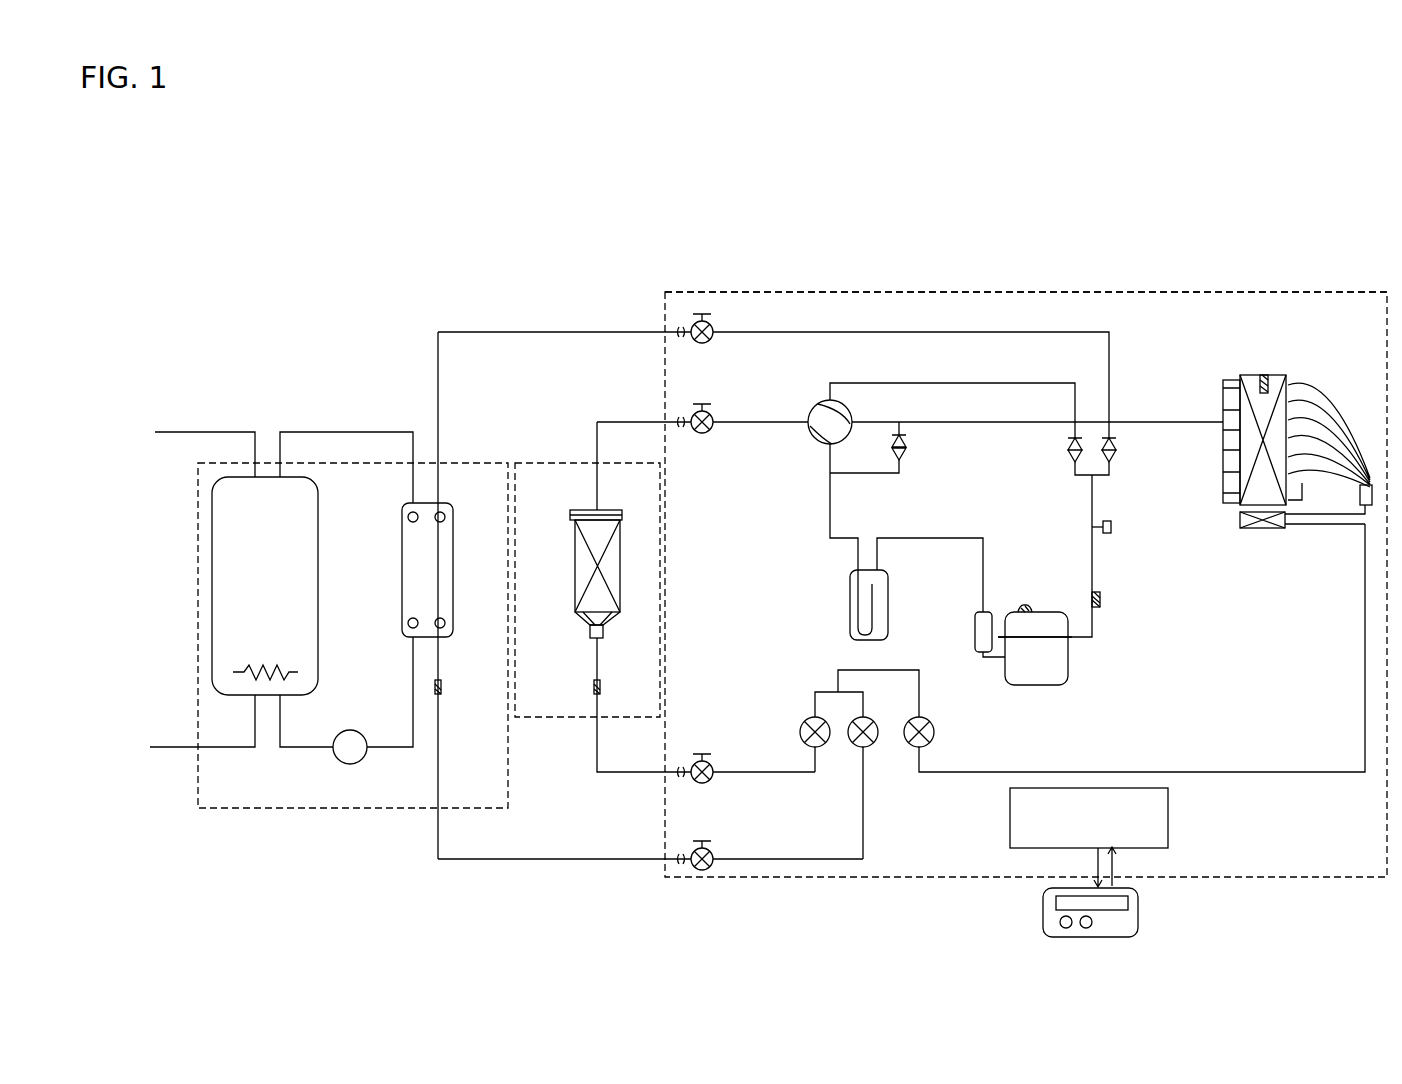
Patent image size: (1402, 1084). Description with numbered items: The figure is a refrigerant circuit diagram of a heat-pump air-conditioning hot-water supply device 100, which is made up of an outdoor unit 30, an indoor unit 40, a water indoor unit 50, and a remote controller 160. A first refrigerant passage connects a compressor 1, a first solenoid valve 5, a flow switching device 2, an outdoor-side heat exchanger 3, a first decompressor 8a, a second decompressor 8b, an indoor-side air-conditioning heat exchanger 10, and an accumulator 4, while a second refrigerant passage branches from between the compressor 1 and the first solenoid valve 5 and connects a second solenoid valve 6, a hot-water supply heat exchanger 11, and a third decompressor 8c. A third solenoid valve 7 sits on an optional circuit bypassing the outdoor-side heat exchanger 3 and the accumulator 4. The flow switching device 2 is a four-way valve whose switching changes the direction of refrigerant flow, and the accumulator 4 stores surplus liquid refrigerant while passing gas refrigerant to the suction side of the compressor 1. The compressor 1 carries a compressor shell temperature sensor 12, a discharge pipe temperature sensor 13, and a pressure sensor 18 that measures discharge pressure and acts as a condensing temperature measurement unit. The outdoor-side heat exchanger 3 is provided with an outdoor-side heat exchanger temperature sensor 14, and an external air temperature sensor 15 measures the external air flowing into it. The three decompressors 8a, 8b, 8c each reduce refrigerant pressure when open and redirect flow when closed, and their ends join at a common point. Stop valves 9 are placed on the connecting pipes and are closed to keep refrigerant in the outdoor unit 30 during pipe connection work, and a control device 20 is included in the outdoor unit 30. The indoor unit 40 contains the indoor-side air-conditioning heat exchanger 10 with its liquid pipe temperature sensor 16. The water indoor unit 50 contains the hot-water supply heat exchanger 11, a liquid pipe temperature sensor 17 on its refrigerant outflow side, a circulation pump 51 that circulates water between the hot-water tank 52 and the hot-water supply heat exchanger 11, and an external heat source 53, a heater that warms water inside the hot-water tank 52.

The compressor 1 is at (1035, 687).
The flow switching device 2 is at (852, 414).
The outdoor-side heat exchanger 3 is at (1300, 378).
The accumulator 4 is at (850, 600).
The first solenoid valve 5 is at (1068, 450).
The second solenoid valve 6 is at (1116, 458).
The third solenoid valve 7 is at (905, 456).
The first decompressor 8a is at (933, 724).
The second decompressor 8b is at (805, 722).
The third decompressor 8c is at (873, 745).
The stop valve 9 is at (712, 323).
The indoor-side air-conditioning heat exchanger 10 is at (620, 566).
The hot-water supply heat exchanger 11 is at (453, 576).
The compressor shell temperature sensor 12 is at (1025, 605).
The discharge pipe temperature sensor 13 is at (1102, 604).
The outdoor-side heat exchanger temperature sensor 14 is at (1246, 378).
The external air temperature sensor 15 is at (1264, 372).
The indoor-side air-conditioning heat exchanger liquid pipe temperature sensor 16 is at (600, 694).
The hot-water supply heat exchanger liquid pipe temperature sensor 17 is at (442, 694).
The pressure sensor 18 is at (1112, 528).
The control device 20 is at (1010, 832).
The outdoor unit 30 is at (920, 292).
The indoor unit 40 is at (522, 463).
The water indoor unit 50 is at (445, 463).
The circulation pump 51 is at (355, 764).
The hot-water tank 52 is at (322, 484).
The external heat source 53 is at (264, 668).
The heat-pump air-conditioning hot-water supply device 100 is at (1270, 286).
The remote controller 160 is at (1142, 916).